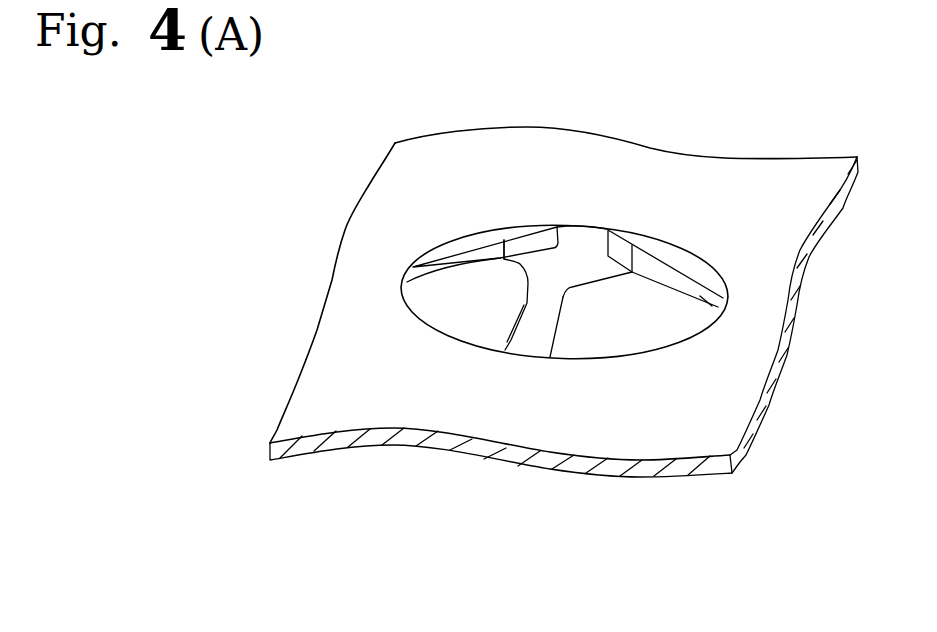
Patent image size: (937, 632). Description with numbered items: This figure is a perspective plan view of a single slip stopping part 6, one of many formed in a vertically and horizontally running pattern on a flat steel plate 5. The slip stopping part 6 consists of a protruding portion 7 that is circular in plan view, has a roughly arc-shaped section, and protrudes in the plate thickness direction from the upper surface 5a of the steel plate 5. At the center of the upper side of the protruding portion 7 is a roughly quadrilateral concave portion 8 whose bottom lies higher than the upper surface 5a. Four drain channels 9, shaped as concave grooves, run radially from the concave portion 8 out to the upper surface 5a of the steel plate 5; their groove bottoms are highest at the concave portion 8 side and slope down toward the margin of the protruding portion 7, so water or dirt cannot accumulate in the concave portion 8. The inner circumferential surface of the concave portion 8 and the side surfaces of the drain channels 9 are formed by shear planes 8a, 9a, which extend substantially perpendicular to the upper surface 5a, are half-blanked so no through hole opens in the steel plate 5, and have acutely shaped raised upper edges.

The steel plate 5 is at (678, 467).
The upper surface of the steel plate 5a is at (767, 187).
The slip stopping part 6 is at (388, 259).
The protruding portion 7 is at (672, 255).
The concave portion 8 is at (578, 253).
The shear plane 8a is at (523, 242).
The drain channel 9 is at (707, 303).
The shear plane 9a is at (470, 253).